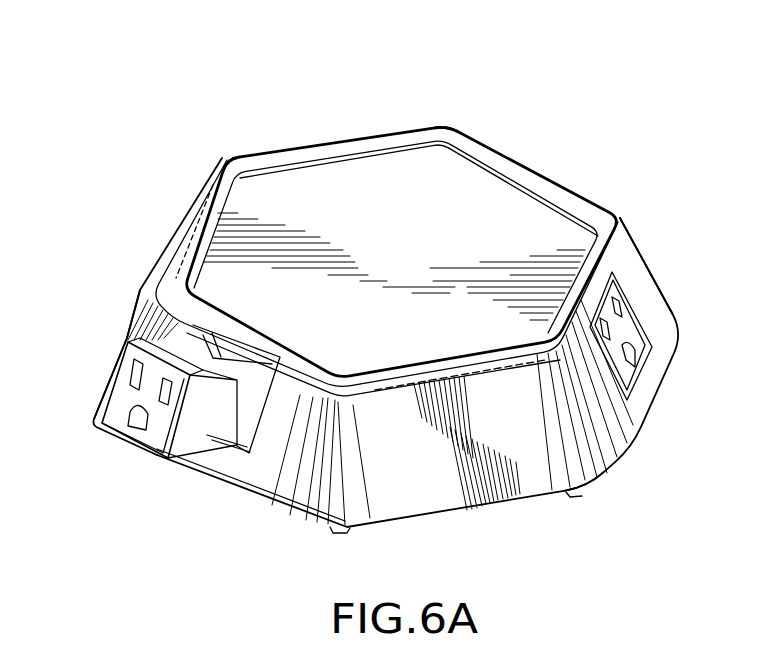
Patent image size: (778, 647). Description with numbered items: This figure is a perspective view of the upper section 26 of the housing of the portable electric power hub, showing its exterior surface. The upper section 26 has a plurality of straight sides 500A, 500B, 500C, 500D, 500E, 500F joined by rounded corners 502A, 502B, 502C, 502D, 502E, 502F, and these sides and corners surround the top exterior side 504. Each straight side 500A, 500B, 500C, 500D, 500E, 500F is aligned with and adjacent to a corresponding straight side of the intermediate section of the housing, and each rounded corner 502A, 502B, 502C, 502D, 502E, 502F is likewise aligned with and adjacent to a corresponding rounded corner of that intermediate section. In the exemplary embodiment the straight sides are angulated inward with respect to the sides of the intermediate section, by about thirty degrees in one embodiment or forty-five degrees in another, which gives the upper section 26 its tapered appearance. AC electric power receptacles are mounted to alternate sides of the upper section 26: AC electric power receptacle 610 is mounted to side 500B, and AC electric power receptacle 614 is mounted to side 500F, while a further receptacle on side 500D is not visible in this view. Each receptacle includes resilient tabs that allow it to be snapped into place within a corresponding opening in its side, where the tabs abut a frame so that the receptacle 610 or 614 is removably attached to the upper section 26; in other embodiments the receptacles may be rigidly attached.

The upper section 26 is at (358, 90).
The top exterior side 504 is at (422, 163).
The straight side 500A is at (407, 490).
The straight side 500B is at (660, 340).
The straight side 500C is at (542, 173).
The straight side 500D is at (313, 140).
The straight side 500E is at (165, 257).
The straight side 500F is at (253, 470).
The rounded corner 502A is at (337, 503).
The rounded corner 502B is at (575, 467).
The rounded corner 502C is at (620, 217).
The rounded corner 502D is at (447, 125).
The rounded corner 502E is at (227, 157).
The rounded corner 502F is at (133, 330).
The AC electric power receptacle 610 is at (627, 372).
The AC electric power receptacle 614 is at (157, 433).